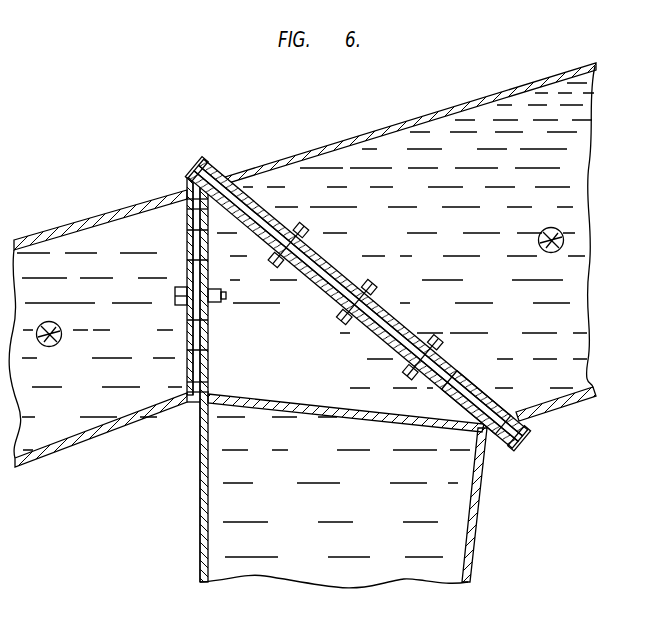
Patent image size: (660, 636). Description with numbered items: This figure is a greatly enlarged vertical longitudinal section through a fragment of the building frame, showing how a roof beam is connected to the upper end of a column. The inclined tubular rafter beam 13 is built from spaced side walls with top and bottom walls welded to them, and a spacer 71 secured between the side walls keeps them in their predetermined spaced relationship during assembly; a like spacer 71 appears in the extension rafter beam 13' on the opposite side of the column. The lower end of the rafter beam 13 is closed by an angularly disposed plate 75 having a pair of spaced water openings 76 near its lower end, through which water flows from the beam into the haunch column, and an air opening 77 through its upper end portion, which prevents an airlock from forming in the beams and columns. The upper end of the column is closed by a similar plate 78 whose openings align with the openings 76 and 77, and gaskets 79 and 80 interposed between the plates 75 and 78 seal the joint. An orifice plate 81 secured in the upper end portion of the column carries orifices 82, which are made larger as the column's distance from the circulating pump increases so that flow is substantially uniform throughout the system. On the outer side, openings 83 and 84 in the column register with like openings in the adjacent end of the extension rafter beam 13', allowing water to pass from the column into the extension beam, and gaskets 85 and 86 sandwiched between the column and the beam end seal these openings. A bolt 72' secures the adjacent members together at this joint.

The rafter beam 13 is at (298, 232).
The extension rafter beam 13' is at (98, 313).
The spacer 71 is at (46, 346).
The bolt 72' is at (170, 312).
The angularly disposed plate 75 is at (340, 262).
The water openings 76 is at (480, 397).
The air opening 77 is at (256, 208).
The column closure plate 78 is at (314, 278).
The gasket 79 is at (522, 441).
The gasket 80 is at (200, 163).
The orifice plate 81 is at (293, 408).
The orifices 82 is at (338, 406).
The opening 83 is at (207, 390).
The opening 84 is at (190, 245).
The gasket 85 is at (193, 402).
The gasket 86 is at (193, 195).